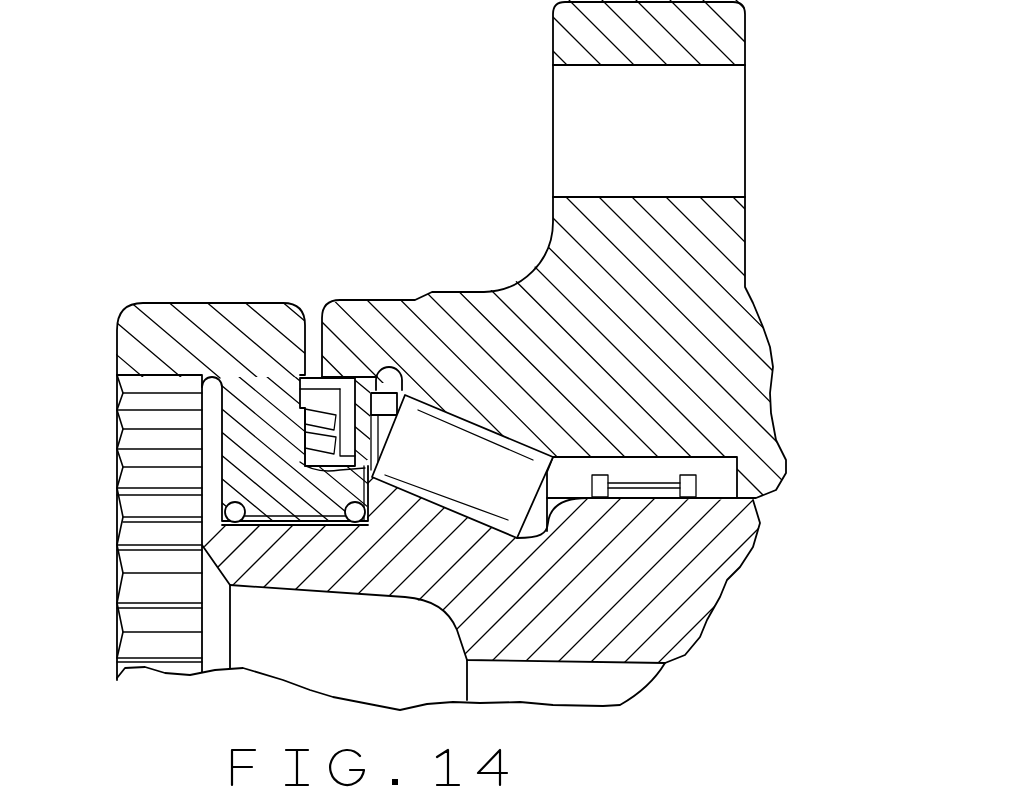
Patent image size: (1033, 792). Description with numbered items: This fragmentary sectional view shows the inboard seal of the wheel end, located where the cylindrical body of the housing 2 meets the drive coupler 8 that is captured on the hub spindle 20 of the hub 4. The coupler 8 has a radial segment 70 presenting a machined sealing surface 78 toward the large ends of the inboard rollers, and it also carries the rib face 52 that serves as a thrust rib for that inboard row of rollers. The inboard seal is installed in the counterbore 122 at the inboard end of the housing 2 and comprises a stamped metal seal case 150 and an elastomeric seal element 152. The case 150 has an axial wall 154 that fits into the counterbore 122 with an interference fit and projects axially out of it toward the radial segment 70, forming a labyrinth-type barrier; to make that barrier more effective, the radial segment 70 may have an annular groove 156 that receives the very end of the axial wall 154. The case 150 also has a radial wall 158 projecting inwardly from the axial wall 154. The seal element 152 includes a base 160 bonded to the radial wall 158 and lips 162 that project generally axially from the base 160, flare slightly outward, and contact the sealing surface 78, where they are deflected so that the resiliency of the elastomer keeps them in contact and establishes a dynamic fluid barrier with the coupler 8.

The housing 2 is at (745, 245).
The hub 4 is at (740, 570).
The drive coupler 8 is at (237, 300).
The hub spindle 20 is at (673, 627).
The rib face 52 is at (395, 490).
The radial segment 70 is at (263, 400).
The sealing surface 78 is at (352, 470).
The counterbore 122 is at (305, 525).
The seal case 150 is at (400, 390).
The seal element 152 is at (243, 668).
The axial wall 154 is at (330, 378).
The annular groove 156 is at (307, 367).
The radial wall 158 is at (405, 392).
The base 160 is at (366, 520).
The lips 162 is at (320, 445).